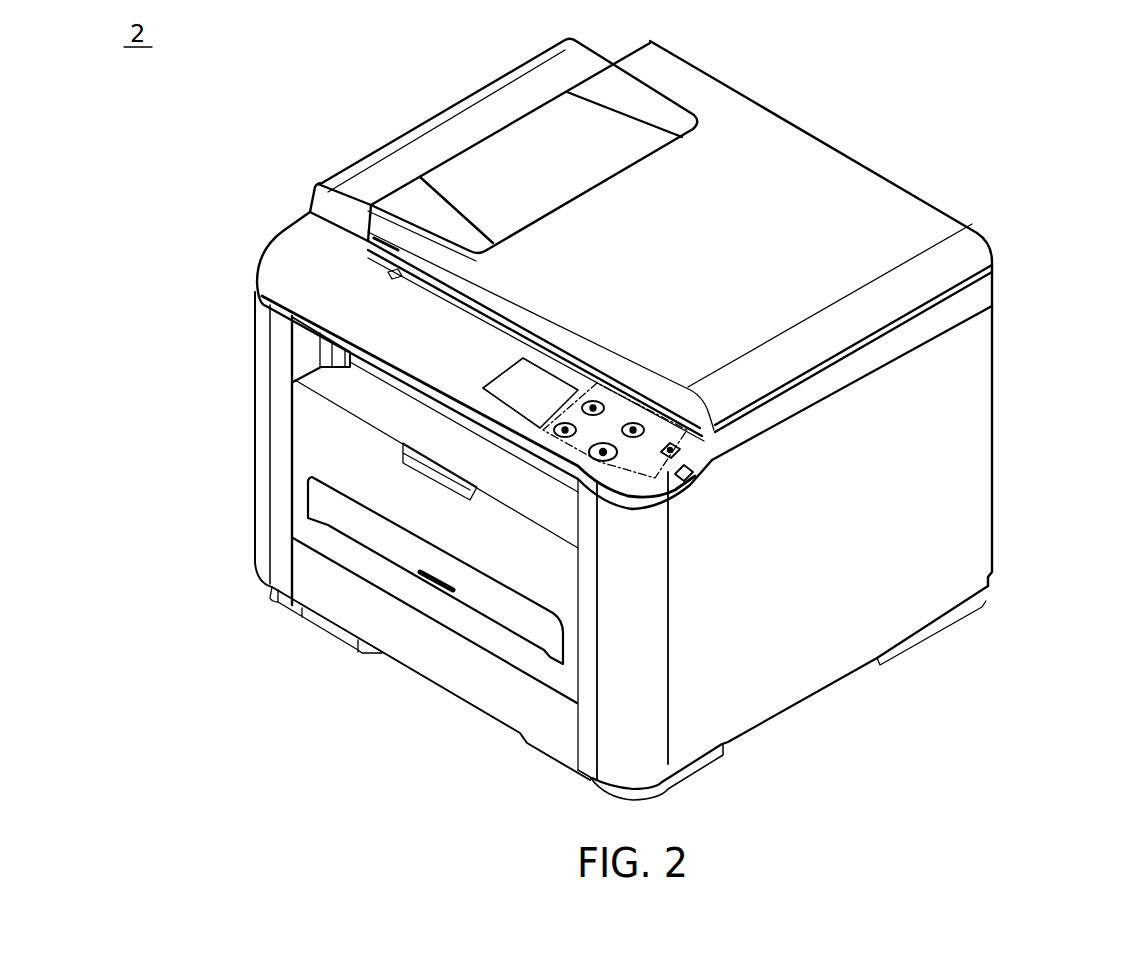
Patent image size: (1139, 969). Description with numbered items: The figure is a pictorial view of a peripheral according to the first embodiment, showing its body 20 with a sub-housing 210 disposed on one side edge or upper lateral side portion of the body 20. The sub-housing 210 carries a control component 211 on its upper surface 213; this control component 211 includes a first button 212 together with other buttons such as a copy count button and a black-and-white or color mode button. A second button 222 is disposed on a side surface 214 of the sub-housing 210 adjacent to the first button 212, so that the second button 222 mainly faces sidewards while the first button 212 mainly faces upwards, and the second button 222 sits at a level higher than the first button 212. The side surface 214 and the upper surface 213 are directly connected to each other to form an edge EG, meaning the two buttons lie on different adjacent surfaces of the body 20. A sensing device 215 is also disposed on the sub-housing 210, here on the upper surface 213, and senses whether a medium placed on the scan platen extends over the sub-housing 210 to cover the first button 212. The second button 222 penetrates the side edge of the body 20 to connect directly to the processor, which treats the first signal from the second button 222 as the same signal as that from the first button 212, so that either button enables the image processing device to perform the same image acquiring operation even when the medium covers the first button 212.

The body 20 is at (994, 355).
The sub-housing 210 is at (257, 278).
The control component 211 is at (588, 376).
The first button 212 is at (610, 461).
The upper surface 213 is at (543, 357).
The side surface 214 is at (707, 469).
The sensing device 215 is at (388, 273).
The second button 222 is at (693, 481).
The edge EG is at (702, 448).